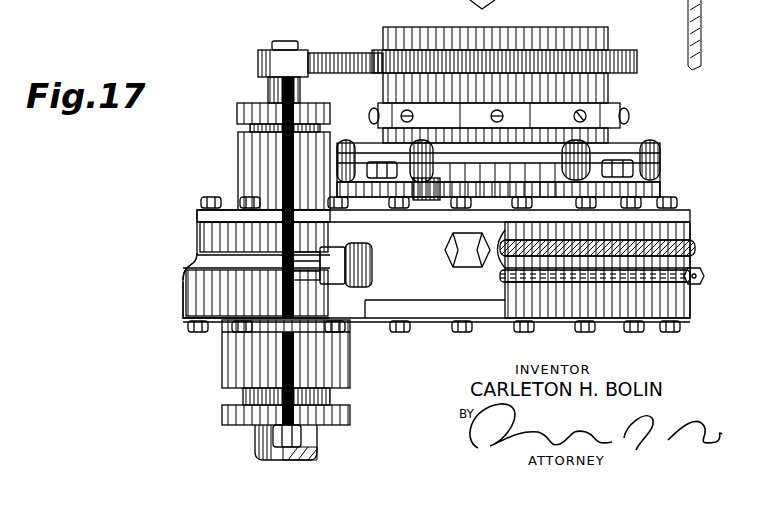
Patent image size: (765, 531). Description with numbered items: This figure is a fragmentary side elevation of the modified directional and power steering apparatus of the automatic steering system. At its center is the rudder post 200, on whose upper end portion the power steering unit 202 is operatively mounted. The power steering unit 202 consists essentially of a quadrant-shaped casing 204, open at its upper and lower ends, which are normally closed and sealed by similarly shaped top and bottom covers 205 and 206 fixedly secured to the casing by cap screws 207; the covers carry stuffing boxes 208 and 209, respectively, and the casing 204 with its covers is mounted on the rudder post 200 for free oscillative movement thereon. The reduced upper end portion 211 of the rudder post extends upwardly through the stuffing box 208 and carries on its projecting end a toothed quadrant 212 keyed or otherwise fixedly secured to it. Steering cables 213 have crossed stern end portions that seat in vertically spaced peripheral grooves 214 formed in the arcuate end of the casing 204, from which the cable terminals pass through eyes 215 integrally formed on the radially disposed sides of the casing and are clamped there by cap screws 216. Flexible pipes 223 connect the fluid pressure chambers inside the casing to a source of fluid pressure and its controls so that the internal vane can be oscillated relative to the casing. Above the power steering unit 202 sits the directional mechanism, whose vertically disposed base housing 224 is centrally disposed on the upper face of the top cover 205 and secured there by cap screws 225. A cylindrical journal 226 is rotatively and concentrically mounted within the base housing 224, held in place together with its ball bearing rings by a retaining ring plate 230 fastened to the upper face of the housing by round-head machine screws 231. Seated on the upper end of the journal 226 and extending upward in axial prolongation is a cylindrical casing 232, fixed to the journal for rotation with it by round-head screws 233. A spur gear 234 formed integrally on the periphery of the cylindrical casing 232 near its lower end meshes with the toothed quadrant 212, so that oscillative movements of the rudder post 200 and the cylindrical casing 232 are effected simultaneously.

The rudder post 200 is at (254, 438).
The power steering unit 202 is at (192, 338).
The casing 204 is at (195, 252).
The top cover 205 is at (196, 215).
The bottom cover 206 is at (183, 310).
The cap screws 207 is at (205, 185).
The stuffing box 208 is at (243, 140).
The stuffing box 209 is at (222, 378).
The reduced upper end portion 211 is at (266, 97).
The toothed quadrant 212 is at (322, 53).
The steering cables 213 is at (700, 268).
The peripheral grooves 214 is at (552, 290).
The eyes 215 is at (496, 300).
The cap screws 216 is at (458, 246).
The flexible pipes 223 is at (293, 272).
The base housing 224 is at (667, 185).
The cap screws 225 is at (635, 165).
The cylindrical journal 226 is at (617, 137).
The retaining ring plate 230 is at (623, 140).
The round-head machine screws 231 is at (655, 142).
The cylindrical casing 232 is at (607, 28).
The round-head screws 233 is at (620, 112).
The spur gear 234 is at (635, 68).